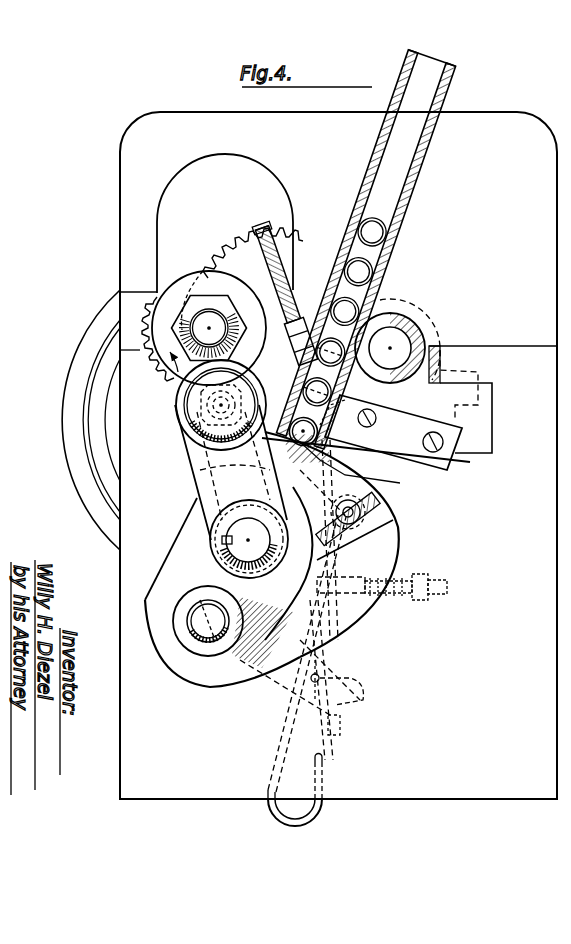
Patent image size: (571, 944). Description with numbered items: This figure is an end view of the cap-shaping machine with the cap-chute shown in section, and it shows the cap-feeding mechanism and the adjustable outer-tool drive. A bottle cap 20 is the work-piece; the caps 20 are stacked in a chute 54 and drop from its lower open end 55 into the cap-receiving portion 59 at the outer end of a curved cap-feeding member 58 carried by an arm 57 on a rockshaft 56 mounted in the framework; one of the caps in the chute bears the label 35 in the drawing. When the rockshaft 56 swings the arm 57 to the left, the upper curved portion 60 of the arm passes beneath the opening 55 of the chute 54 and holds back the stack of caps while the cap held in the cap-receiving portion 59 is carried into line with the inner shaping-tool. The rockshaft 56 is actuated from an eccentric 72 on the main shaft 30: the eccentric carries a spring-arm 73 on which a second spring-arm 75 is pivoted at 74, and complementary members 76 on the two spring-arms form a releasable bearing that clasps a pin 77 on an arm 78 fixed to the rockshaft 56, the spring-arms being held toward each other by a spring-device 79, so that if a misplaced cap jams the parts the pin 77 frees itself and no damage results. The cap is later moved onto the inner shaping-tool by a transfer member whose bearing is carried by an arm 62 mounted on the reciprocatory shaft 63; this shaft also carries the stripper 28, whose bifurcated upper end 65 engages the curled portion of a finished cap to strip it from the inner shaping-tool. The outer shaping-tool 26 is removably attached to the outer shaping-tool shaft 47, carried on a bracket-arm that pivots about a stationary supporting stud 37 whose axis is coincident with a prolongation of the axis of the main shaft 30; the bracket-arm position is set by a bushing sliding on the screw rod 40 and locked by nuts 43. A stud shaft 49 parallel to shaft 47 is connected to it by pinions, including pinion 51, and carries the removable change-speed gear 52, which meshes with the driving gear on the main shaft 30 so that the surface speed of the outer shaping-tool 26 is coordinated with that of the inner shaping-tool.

The bottle cap 20 is at (231, 462).
The outer shaping-tool 26 is at (167, 292).
The stripper 28 is at (197, 470).
The main shaft 30 is at (140, 317).
The ball 35 is at (359, 270).
The stationary supporting stud 37 is at (383, 348).
The screw rod 40 is at (268, 230).
The nuts 43 is at (293, 288).
The outer shaping-tool shaft 47 is at (192, 330).
The stud shaft 49 is at (241, 258).
The pinion 51 is at (290, 243).
The gear 52 is at (228, 250).
The chute 54 is at (457, 87).
The lower open end 55 is at (380, 430).
The rockshaft 56 is at (200, 630).
The arm 57 is at (330, 628).
The cap-feeding member 58 is at (365, 482).
The cap-receiving portion 59 is at (303, 445).
The upper curved portion 60 is at (392, 495).
The arm 62 is at (190, 497).
The reciprocatory shaft 63 is at (240, 533).
The bifurcated upper end 65 is at (200, 432).
The eccentric 72 is at (440, 332).
The spring-arm 73 is at (268, 788).
The pivot 74 is at (383, 518).
The second spring-arm 75 is at (342, 725).
The complementary members 76 is at (337, 660).
The pin 77 is at (340, 678).
The arm 78 is at (360, 705).
The spring-device 79 is at (407, 568).